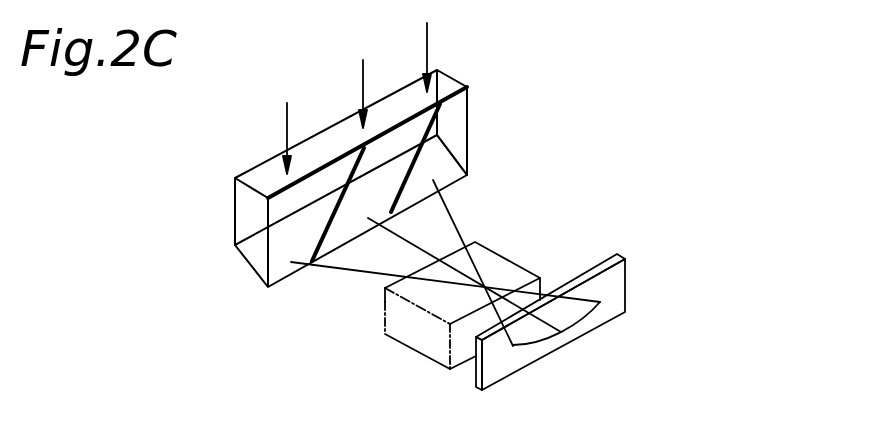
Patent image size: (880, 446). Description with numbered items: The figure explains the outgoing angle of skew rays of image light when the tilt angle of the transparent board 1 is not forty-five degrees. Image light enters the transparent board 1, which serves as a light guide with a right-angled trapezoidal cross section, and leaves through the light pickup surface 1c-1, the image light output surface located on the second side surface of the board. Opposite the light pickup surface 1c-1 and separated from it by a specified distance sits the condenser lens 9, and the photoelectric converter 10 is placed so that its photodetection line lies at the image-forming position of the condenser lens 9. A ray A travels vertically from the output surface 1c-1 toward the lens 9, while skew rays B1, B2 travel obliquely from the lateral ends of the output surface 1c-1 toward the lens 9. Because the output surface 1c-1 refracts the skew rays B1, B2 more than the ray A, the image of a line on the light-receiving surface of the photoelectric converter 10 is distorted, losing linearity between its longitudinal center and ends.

The transparent board 1 is at (233, 212).
The light pickup surface 1c-1 is at (464, 173).
The condenser lens 9 is at (408, 345).
The photoelectric converter 10 is at (625, 297).
The ray A is at (387, 231).
The skew ray B1 is at (450, 218).
The skew ray B2 is at (312, 262).